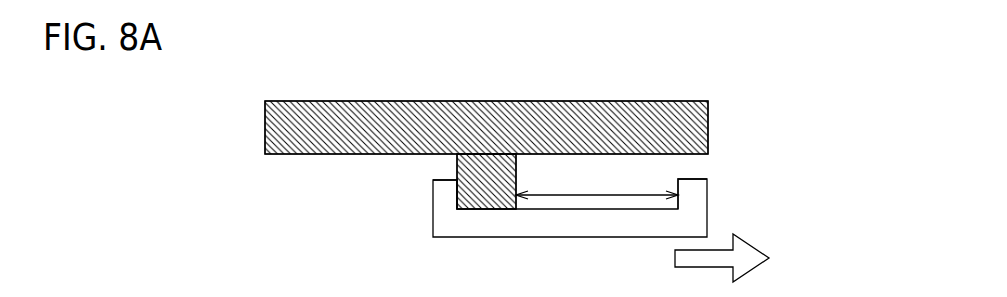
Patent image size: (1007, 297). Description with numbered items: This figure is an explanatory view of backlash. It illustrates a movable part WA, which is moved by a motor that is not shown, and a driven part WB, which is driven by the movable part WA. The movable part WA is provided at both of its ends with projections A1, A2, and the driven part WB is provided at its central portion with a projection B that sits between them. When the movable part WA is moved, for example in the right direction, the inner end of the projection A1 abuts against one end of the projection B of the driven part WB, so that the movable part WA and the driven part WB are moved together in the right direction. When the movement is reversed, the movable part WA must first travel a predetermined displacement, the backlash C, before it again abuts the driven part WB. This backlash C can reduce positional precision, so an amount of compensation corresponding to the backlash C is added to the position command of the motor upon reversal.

The driven part WB is at (685, 125).
The movable part WA is at (517, 227).
The projection B is at (485, 175).
The projection A1 is at (443, 197).
The projection A2 is at (688, 198).
The backlash C is at (597, 182).